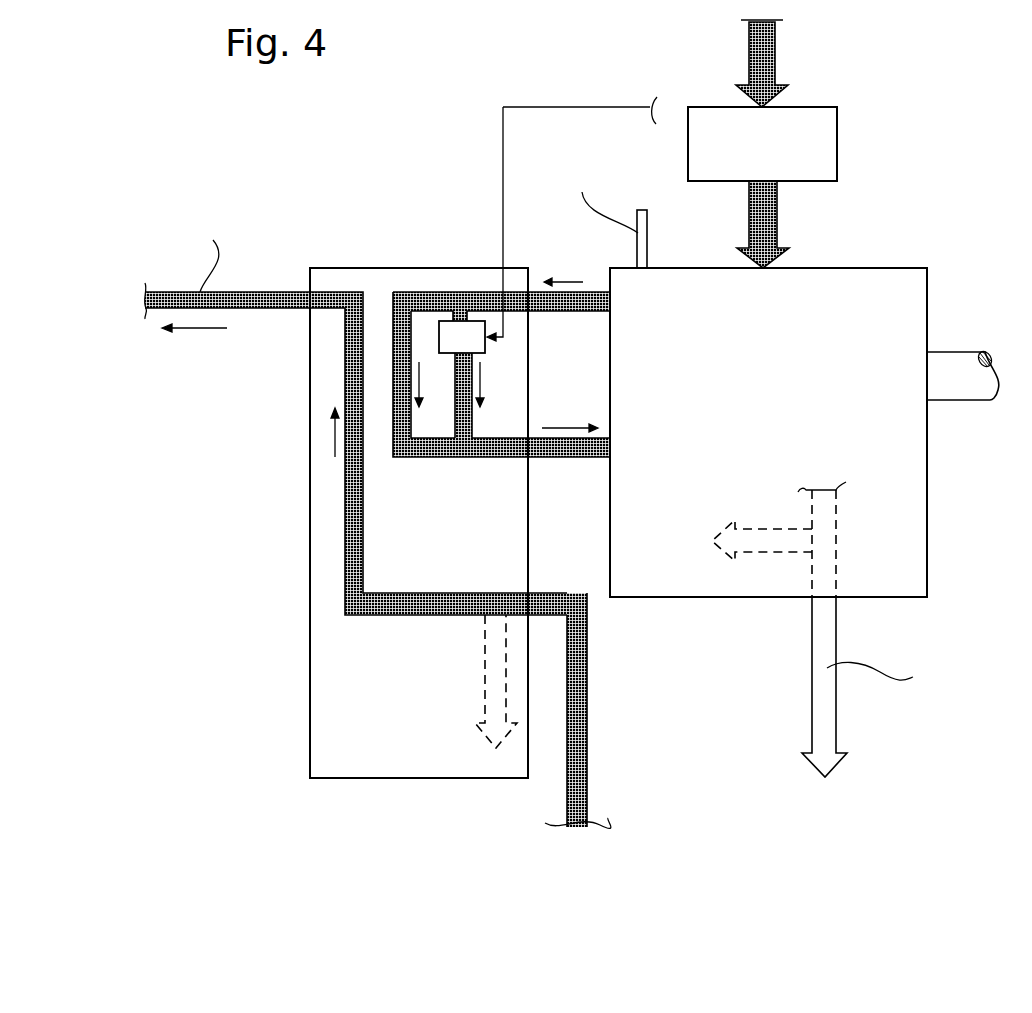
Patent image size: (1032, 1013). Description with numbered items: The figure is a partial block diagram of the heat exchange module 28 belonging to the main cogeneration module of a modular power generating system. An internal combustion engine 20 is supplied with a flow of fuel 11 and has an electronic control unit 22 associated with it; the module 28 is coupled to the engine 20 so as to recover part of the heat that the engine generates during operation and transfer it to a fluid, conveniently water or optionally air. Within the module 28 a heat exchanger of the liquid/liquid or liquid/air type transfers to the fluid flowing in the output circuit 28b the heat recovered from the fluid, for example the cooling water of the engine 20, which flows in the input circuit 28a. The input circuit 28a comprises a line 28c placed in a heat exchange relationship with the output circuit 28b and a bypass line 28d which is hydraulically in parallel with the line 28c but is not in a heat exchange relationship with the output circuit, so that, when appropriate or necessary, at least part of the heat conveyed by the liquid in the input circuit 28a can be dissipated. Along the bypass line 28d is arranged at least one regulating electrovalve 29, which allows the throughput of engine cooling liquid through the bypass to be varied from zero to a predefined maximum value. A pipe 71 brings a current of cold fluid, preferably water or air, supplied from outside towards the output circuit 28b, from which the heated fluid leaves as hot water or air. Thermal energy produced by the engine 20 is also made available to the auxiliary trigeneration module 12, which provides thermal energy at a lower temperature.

The fuel 11 is at (642, 247).
The auxiliary trigeneration module 12 is at (737, 630).
The internal combustion engine 20 is at (905, 548).
The electronic control unit (ECU) 22 is at (831, 140).
The heat exchange module 28 is at (342, 707).
The input circuit 28a is at (497, 303).
The output circuit 28b is at (352, 492).
The line 28c is at (393, 352).
The bypass line 28d is at (465, 408).
The regulating electrovalve 29 is at (455, 335).
The pipe 71 is at (578, 763).